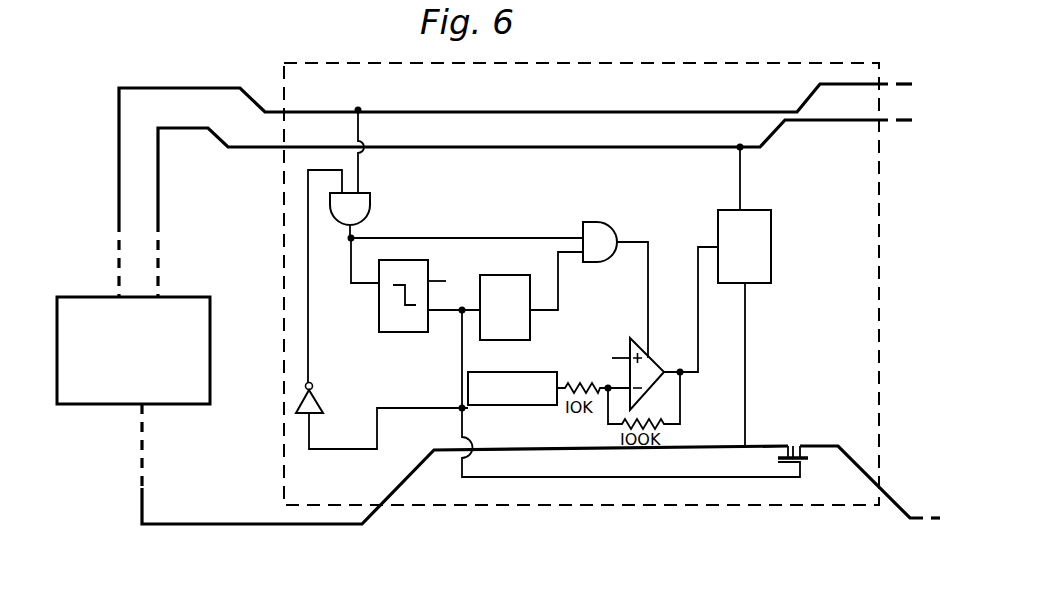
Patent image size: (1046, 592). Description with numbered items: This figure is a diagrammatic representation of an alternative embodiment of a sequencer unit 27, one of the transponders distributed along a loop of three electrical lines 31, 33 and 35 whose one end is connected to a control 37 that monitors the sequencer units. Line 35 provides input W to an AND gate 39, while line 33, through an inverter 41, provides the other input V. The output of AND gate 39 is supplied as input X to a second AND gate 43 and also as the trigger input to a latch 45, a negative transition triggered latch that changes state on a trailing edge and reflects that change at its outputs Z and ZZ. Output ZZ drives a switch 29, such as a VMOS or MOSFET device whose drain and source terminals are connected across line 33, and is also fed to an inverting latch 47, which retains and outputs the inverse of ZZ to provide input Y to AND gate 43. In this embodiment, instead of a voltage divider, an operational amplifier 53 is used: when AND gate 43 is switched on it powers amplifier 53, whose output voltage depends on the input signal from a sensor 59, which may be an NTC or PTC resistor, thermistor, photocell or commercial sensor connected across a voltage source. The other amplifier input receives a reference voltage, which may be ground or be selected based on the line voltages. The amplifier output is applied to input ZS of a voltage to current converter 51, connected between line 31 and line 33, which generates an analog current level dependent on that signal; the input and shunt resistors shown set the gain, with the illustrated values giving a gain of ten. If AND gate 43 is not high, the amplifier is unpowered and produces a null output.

The sequencer unit 27 is at (598, 62).
The switch 29 is at (795, 446).
The electrical line 31 is at (203, 134).
The electrical line 33 is at (256, 527).
The electrical line 35 is at (201, 87).
The control 37 is at (212, 334).
The AND gate 39 is at (371, 199).
The inverter 41 is at (322, 405).
The AND gate 43 is at (603, 227).
The latch 45 is at (378, 315).
The inverting latch 47 is at (521, 273).
The voltage to current converter 51 is at (772, 259).
The operational amplifier 53 is at (655, 361).
The sensor 59 is at (539, 407).